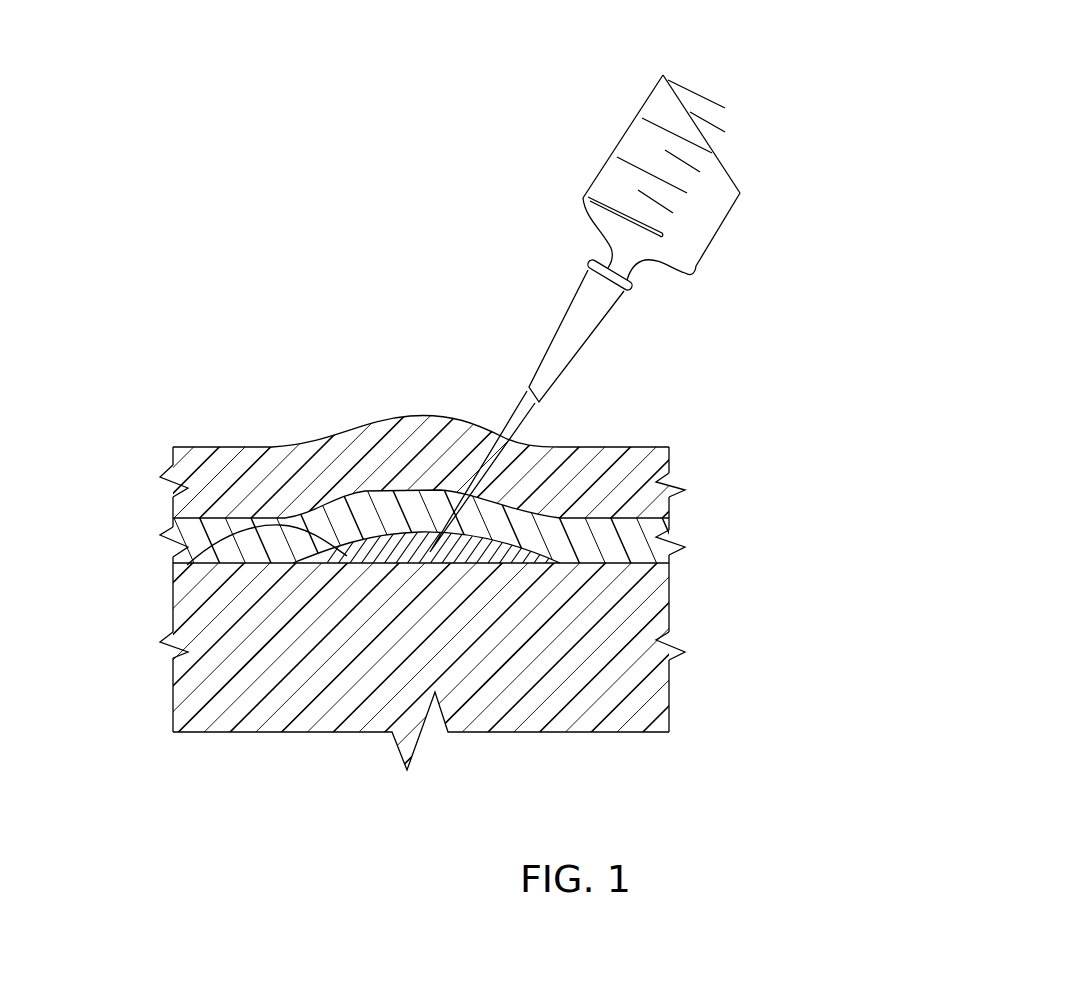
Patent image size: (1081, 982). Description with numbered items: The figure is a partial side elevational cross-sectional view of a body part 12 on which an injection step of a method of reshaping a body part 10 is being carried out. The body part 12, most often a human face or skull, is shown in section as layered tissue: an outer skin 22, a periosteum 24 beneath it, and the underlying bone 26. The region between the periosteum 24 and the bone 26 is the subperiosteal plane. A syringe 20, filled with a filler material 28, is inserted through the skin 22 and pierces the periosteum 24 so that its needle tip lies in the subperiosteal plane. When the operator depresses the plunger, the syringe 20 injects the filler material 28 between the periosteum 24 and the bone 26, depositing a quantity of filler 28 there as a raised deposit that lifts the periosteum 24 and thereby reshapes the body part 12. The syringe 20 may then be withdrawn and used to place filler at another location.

The method of reshaping a body part 10 is at (958, 92).
The body part 12 is at (375, 235).
The syringe 20 is at (590, 338).
The skin 22 is at (662, 458).
The periosteum 24 is at (666, 518).
The bone 26 is at (667, 607).
The filler material 28 is at (195, 566).